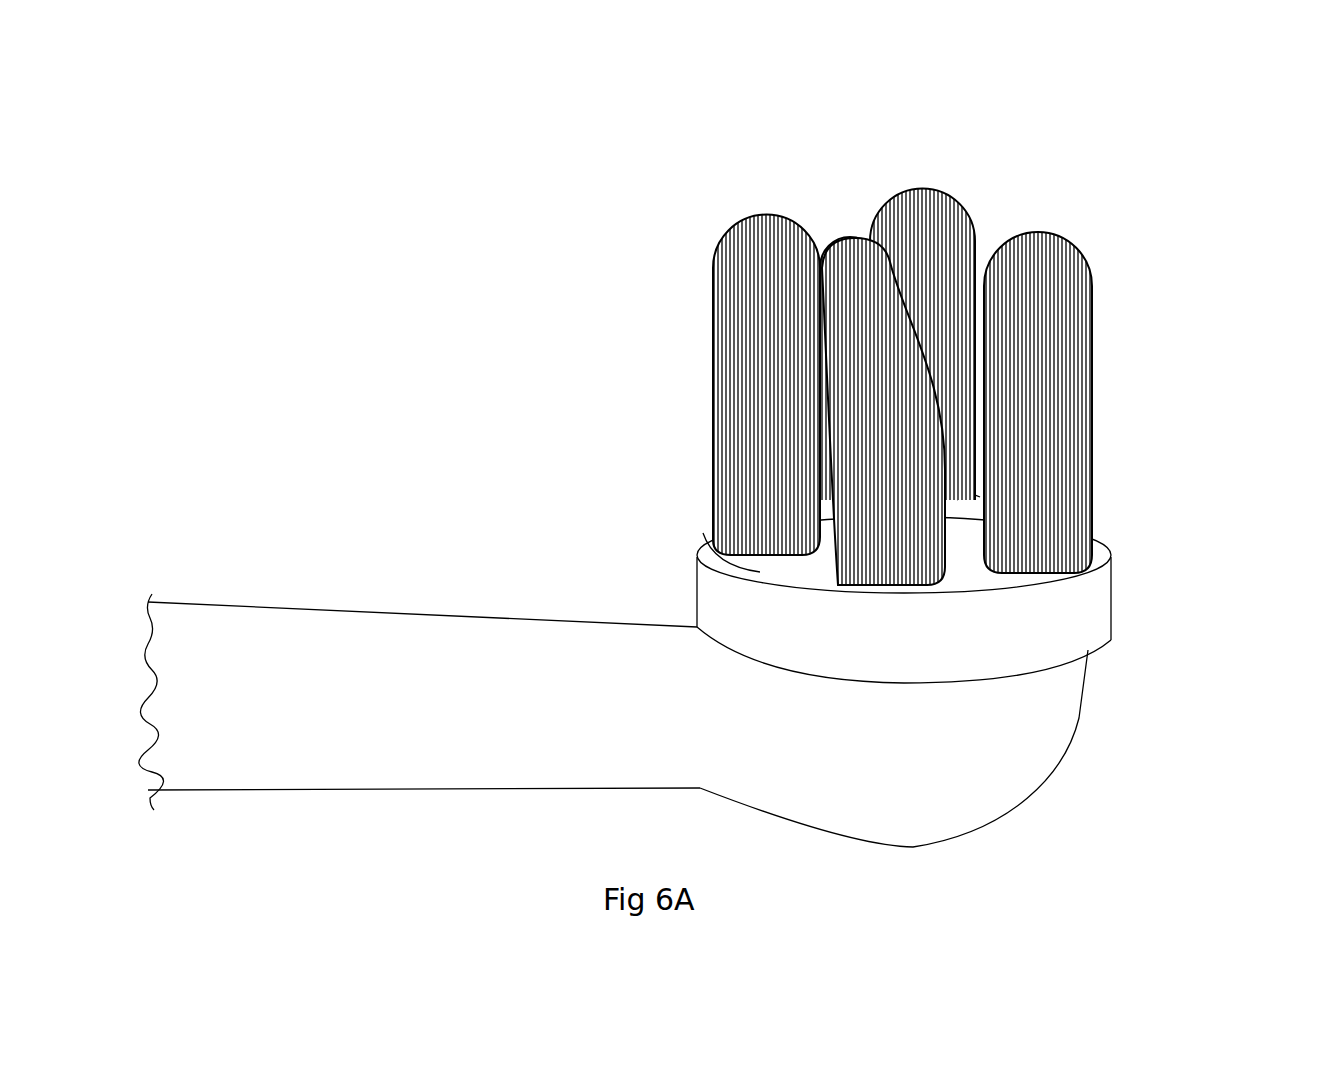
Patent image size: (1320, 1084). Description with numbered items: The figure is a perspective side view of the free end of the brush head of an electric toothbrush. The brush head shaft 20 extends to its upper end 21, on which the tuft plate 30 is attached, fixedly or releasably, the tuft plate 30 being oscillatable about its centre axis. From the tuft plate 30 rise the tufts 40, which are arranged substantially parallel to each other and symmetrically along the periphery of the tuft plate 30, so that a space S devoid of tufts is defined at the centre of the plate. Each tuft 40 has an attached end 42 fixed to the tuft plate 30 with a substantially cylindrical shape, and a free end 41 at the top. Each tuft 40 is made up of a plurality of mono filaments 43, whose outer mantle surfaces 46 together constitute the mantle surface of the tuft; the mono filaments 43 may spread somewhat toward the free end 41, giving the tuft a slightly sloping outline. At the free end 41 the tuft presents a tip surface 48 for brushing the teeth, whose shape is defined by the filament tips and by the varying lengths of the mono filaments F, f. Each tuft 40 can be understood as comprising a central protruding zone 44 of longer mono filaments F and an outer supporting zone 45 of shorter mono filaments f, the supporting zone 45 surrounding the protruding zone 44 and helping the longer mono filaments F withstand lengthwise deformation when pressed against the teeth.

The brush head shaft 20 is at (372, 652).
The upper end 21 is at (1110, 757).
The tuft plate 30 is at (793, 568).
The space S is at (953, 546).
The tuft 40 is at (880, 334).
The free end 41 is at (679, 238).
The attached end 42 is at (697, 366).
The mono filaments 43 is at (697, 366).
The mantle surface 46 is at (697, 366).
The protruding zone 44 is at (868, 334).
The supporting zone 45 is at (972, 212).
The tip surface 48 is at (827, 235).
The mono filaments of the protruding zone F is at (1084, 332).
The mono filaments of the supporting zone f is at (1082, 252).